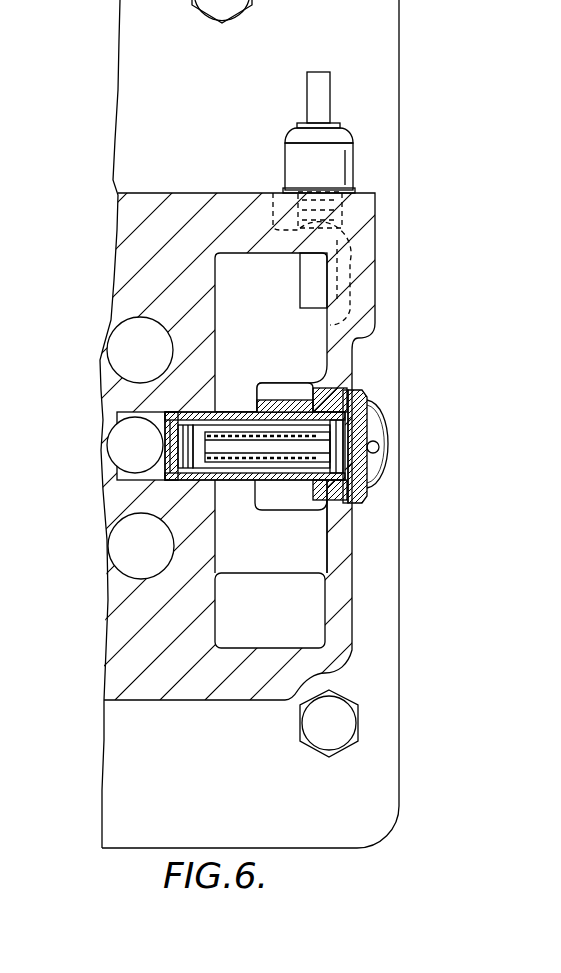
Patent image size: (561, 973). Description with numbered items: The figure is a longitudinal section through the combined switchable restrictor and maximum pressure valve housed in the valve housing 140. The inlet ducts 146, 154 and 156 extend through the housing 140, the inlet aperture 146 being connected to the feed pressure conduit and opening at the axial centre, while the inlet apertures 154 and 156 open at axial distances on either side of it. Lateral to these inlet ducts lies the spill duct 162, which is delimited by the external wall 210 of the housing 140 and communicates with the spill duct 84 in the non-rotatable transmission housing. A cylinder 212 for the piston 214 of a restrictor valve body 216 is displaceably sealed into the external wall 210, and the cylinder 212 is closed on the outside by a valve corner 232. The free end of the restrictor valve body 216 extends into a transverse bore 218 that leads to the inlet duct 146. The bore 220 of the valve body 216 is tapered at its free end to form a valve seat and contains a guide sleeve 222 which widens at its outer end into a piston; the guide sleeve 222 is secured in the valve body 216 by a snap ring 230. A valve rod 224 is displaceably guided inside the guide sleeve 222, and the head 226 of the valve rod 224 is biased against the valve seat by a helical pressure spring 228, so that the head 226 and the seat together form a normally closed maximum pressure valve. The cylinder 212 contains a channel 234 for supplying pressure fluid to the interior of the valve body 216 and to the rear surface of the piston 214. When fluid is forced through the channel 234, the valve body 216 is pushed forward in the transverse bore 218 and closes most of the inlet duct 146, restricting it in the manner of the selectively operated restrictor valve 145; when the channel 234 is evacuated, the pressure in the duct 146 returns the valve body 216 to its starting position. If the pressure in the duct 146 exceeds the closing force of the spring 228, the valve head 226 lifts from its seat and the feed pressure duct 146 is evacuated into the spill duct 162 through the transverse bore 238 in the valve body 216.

The valve housing 140 is at (197, 197).
The external wall 210 is at (367, 286).
The inlet aperture 156 is at (122, 363).
The inlet aperture 146 is at (117, 458).
The inlet aperture 154 is at (123, 559).
The spill duct 84 is at (256, 624).
The bore of the valve body 220 is at (213, 410).
The restrictor valve body 216 is at (247, 412).
The helical pressure spring 228 is at (258, 418).
The transverse bore 238 is at (304, 410).
The piston 214 is at (360, 404).
The guide sleeve 222 is at (347, 432).
The restrictor valve 145 is at (174, 412).
The channel 234 is at (379, 447).
The valve corner 232 is at (386, 473).
The snap ring 230 is at (370, 482).
The head of the valve rod 226 is at (177, 462).
The transverse bore 218 is at (185, 478).
The valve rod 224 is at (297, 450).
The cylinder 212 is at (312, 497).
The spill duct 162 is at (313, 554).